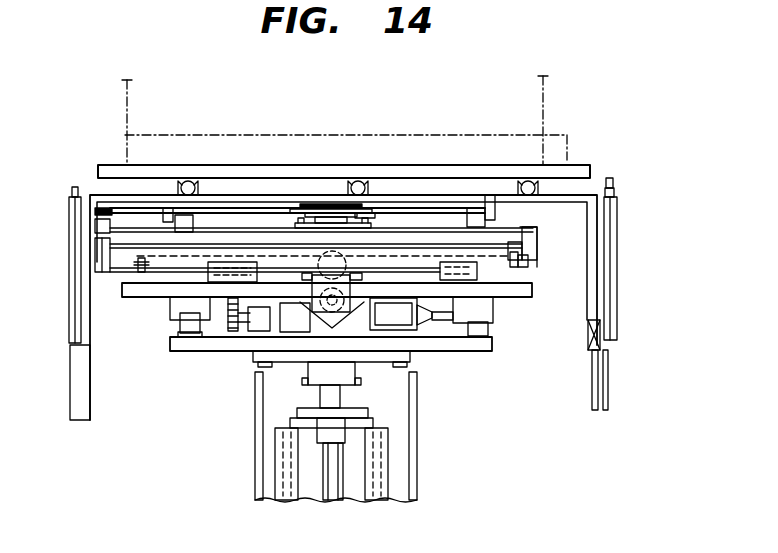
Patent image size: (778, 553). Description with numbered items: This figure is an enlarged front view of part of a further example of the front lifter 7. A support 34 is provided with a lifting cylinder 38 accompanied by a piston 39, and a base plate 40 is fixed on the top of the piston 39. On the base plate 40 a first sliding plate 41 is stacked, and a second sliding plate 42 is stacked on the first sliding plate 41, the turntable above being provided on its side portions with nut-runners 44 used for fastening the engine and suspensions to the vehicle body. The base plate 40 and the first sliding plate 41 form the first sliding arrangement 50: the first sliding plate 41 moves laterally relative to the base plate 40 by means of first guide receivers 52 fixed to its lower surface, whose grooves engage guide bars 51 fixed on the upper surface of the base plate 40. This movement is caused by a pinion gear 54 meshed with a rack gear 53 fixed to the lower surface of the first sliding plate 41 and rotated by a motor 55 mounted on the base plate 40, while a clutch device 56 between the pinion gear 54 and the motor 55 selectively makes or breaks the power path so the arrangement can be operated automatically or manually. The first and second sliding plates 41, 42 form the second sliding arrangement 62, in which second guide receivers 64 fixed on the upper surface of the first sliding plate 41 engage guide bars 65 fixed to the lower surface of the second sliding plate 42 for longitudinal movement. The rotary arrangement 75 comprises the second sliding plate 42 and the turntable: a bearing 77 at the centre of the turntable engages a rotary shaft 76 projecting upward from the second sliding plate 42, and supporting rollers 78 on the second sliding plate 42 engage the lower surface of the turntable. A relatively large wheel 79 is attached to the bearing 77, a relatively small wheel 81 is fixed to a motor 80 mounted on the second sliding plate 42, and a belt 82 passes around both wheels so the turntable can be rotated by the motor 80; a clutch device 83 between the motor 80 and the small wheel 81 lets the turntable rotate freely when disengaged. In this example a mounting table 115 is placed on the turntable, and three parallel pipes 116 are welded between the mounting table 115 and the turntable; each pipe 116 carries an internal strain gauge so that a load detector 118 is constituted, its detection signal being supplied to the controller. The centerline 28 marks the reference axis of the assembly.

The front lifter 7 is at (470, 432).
The center line 28 is at (568, 135).
The support 34 is at (415, 470).
The lifting cylinder 38 is at (322, 480).
The piston 39 is at (323, 402).
The base plate 40 is at (450, 352).
The first sliding plate 41 is at (597, 295).
The second sliding plate 42 is at (507, 232).
The nut-runner 44 is at (74, 216).
The first sliding arrangement 50 is at (163, 323).
The guide bar 51 is at (185, 330).
The first guide receiver 52 is at (172, 308).
The rack gear 53 is at (258, 333).
The pinion gear 54 is at (232, 305).
The motor 55 is at (305, 330).
The clutch device 56 is at (288, 372).
The second sliding arrangement 62 is at (170, 278).
The second guide receiver 64 is at (233, 268).
The guide bar 65 is at (145, 265).
The rotary arrangement 75 is at (328, 190).
The rotary shaft 76 is at (318, 217).
The bearing 77 is at (337, 205).
The supporting roller 78 is at (163, 212).
The relatively large wheel 79 is at (362, 208).
The motor 80 is at (97, 255).
The relatively small wheel 81 is at (100, 208).
The belt 82 is at (233, 207).
The clutch device 83 is at (95, 226).
The mounting table 115 is at (575, 160).
The pipe 116 is at (170, 206).
The load detector 118 is at (199, 188).